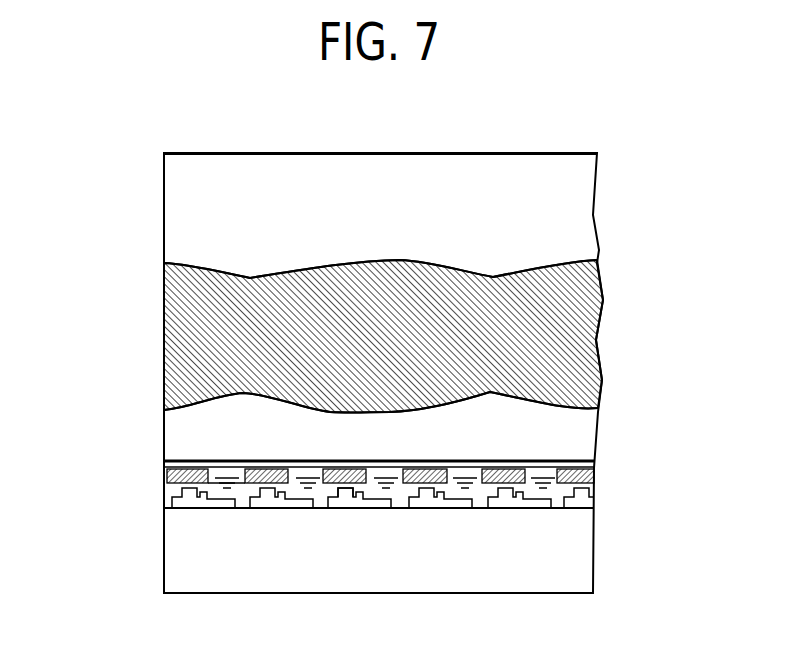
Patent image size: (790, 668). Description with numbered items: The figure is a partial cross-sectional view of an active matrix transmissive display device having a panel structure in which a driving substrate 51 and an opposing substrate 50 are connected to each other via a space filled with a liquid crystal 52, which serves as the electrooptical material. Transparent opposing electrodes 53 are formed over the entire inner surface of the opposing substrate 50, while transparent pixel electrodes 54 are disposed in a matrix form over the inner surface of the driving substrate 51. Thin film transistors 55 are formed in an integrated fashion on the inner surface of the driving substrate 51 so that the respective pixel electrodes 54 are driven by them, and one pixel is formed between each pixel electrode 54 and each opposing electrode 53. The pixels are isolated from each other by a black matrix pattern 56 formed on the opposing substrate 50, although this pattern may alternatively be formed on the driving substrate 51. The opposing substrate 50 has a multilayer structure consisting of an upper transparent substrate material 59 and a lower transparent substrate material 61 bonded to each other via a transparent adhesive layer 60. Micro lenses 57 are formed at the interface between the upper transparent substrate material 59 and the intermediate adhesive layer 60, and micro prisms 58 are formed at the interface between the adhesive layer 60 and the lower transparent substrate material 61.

The opposing substrate 50 is at (605, 153).
The driving substrate 51 is at (600, 490).
The liquid crystal 52 is at (593, 483).
The opposing electrodes 53 is at (168, 469).
The pixel electrodes 54 is at (385, 500).
The thin film transistors 55 is at (345, 500).
The black matrix pattern 56 is at (247, 483).
The micro lenses 57 is at (196, 262).
The micro prisms 58 is at (200, 408).
The upper transparent substrate material 59 is at (201, 180).
The transparent adhesive layer 60 is at (164, 312).
The lower transparent substrate material 61 is at (196, 448).